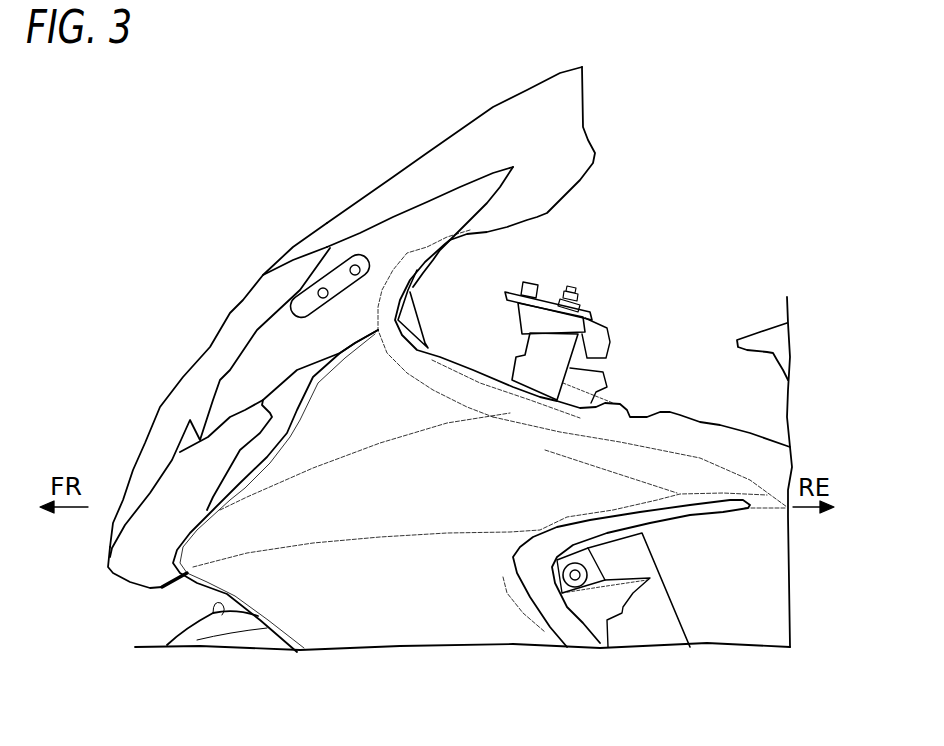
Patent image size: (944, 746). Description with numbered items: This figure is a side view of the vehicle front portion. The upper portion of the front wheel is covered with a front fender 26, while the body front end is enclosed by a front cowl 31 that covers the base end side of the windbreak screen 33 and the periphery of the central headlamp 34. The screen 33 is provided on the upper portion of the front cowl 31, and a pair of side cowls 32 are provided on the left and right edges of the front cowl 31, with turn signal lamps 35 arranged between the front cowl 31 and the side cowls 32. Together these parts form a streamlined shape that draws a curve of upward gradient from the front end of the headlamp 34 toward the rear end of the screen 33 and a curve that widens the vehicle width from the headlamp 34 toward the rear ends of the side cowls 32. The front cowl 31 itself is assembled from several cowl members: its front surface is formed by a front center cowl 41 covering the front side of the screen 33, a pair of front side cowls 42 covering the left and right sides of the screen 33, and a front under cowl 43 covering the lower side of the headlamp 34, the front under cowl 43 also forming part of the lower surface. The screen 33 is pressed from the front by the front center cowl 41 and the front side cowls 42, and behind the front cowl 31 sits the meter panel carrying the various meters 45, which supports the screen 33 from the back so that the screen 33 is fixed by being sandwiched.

The front fender 26 is at (222, 612).
The front cowl 31 is at (208, 282).
The side cowls 32 is at (452, 633).
The windbreak screen 33 is at (530, 86).
The central headlamp 34 is at (157, 407).
The turn signal lamps 35 is at (280, 393).
The front center cowl 41 is at (247, 293).
The front side cowls 42 is at (433, 257).
The front under cowl 43 is at (120, 580).
The meters 45 is at (165, 590).